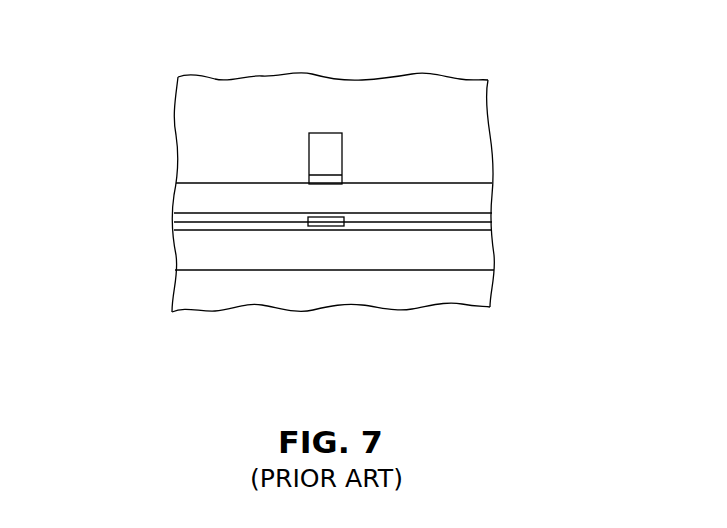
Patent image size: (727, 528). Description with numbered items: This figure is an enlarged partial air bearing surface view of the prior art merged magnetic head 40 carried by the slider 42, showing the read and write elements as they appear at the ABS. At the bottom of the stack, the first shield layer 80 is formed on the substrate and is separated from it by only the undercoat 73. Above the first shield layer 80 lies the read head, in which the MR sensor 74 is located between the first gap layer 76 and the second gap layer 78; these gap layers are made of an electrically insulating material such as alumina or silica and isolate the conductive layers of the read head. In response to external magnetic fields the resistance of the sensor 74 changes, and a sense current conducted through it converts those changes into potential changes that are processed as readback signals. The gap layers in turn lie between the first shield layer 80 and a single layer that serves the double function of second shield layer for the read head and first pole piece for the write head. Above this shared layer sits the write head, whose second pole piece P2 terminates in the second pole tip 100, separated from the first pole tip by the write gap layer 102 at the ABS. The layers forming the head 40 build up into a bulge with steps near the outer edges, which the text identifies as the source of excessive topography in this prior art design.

The magnetic head 40 is at (320, 201).
The slider 42 is at (182, 105).
The first shield layer 80 is at (483, 252).
The second pole tip 100 is at (331, 140).
The write gap layer 102 is at (325, 178).
The second pole piece P2 is at (342, 157).
The MR sensor 74 is at (328, 227).
The first gap layer 76 is at (233, 230).
The undercoat 73 is at (389, 303).
The second gap layer 78 is at (455, 218).